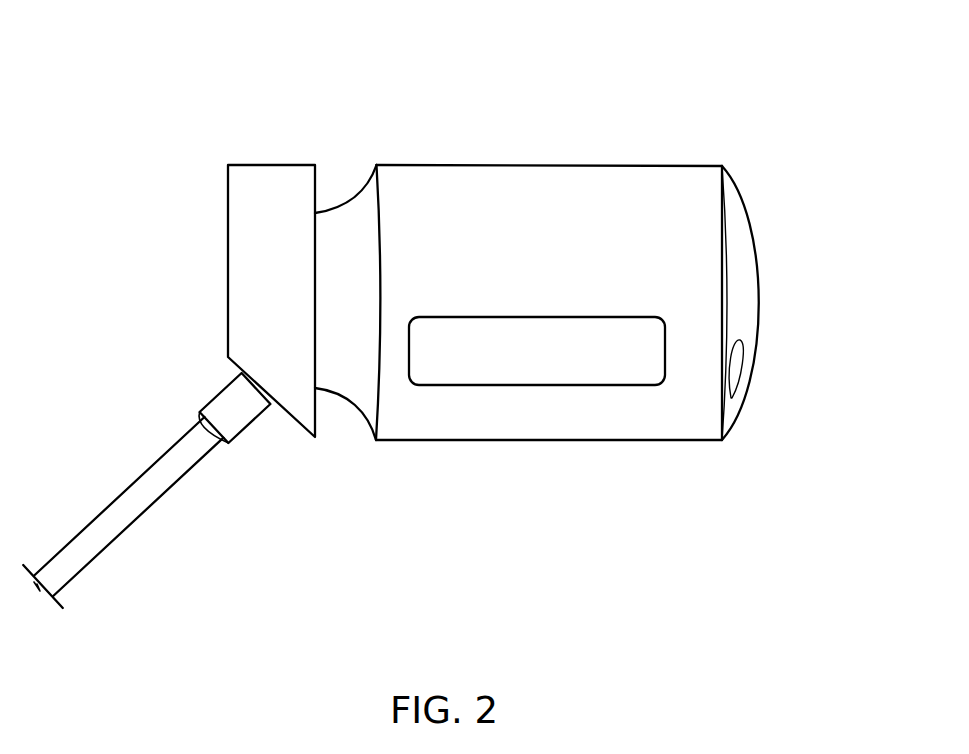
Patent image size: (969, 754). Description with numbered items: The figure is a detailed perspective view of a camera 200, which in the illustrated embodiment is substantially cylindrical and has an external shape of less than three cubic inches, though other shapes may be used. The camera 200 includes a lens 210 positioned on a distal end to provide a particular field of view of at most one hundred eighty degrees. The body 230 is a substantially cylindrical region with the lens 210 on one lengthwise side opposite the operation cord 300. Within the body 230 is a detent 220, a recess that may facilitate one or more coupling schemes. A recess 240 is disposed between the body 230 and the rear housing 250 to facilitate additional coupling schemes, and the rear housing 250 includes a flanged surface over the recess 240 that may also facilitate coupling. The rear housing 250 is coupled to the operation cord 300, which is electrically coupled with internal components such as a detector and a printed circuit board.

The camera 200 is at (846, 110).
The lens 210 is at (753, 321).
The detent 220 is at (580, 370).
The body 230 is at (467, 182).
The recess 240 is at (358, 212).
The rear housing 250 is at (240, 274).
The operation cord 300 is at (87, 552).